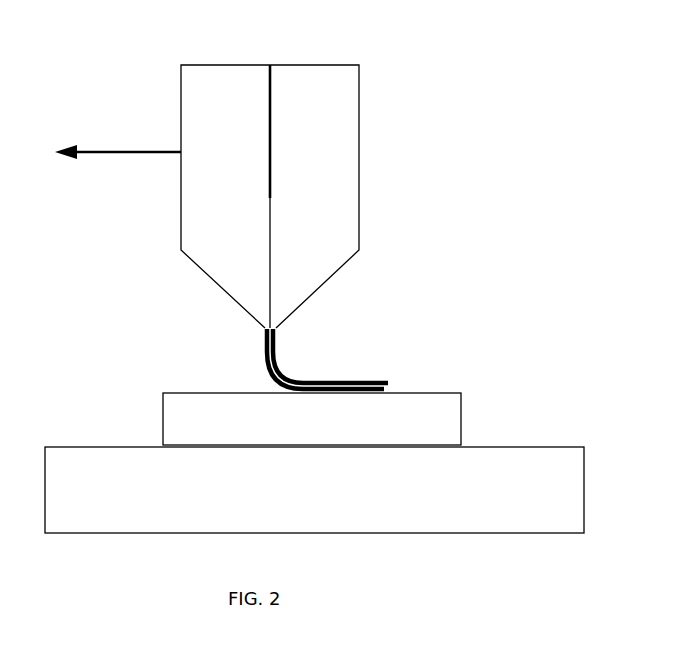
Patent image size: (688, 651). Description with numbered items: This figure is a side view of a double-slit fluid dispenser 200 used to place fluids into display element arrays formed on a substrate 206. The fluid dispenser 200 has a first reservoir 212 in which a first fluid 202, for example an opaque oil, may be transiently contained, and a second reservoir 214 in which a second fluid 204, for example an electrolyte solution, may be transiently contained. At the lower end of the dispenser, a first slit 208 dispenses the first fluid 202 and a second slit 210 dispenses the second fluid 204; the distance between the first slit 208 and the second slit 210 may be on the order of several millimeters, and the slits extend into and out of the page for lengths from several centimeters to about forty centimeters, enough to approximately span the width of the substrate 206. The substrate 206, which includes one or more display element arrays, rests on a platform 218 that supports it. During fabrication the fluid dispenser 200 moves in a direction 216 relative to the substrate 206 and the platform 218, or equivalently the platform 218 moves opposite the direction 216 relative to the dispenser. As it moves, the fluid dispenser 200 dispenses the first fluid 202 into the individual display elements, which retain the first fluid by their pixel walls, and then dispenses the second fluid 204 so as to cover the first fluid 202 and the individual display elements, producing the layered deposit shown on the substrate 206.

The double-slit fluid dispenser 200 is at (387, 40).
The first fluid 202 is at (271, 363).
The second fluid 204 is at (290, 372).
The substrate 206 is at (239, 429).
The first slit 208 is at (262, 324).
The second slit 210 is at (279, 324).
The first reservoir 212 is at (238, 186).
The second reservoir 214 is at (336, 186).
The direction 216 is at (131, 148).
The platform 218 is at (99, 517).